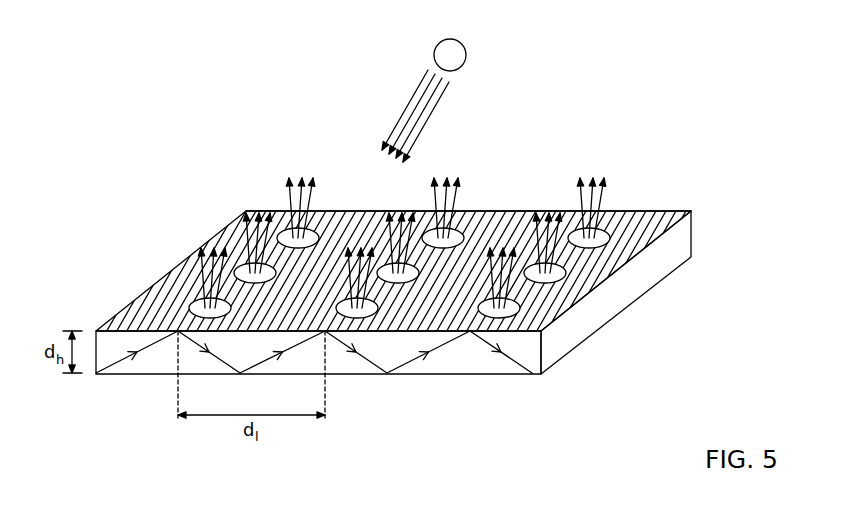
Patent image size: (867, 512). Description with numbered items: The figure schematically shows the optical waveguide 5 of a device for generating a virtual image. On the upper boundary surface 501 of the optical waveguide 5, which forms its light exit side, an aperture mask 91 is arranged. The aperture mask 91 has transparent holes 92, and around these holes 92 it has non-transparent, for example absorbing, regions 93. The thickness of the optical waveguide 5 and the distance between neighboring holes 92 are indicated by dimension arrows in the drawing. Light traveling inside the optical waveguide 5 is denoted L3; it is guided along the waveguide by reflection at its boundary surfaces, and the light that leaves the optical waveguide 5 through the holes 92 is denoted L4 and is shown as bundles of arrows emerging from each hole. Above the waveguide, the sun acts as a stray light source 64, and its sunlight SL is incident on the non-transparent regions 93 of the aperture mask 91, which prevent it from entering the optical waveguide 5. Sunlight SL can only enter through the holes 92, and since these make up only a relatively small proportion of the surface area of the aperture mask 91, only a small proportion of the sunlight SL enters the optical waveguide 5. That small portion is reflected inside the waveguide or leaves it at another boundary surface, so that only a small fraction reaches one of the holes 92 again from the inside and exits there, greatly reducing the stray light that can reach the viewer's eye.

The optical waveguide 5 is at (637, 282).
The upper boundary surface 501 is at (692, 210).
The stray light source 64 is at (452, 58).
The aperture mask 91 is at (653, 210).
The transparent holes 92 is at (618, 214).
The non-transparent regions 93 is at (168, 288).
The light traveling in the optical waveguide L3 is at (120, 362).
The light exiting the optical waveguide L4 is at (575, 196).
The sunlight SL is at (397, 107).